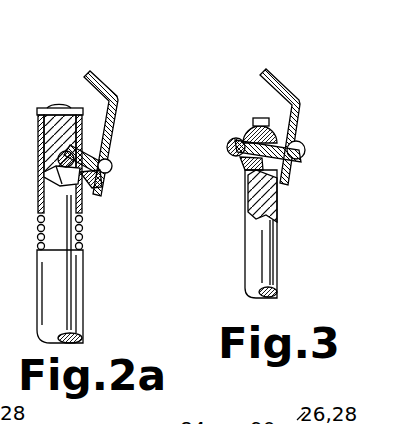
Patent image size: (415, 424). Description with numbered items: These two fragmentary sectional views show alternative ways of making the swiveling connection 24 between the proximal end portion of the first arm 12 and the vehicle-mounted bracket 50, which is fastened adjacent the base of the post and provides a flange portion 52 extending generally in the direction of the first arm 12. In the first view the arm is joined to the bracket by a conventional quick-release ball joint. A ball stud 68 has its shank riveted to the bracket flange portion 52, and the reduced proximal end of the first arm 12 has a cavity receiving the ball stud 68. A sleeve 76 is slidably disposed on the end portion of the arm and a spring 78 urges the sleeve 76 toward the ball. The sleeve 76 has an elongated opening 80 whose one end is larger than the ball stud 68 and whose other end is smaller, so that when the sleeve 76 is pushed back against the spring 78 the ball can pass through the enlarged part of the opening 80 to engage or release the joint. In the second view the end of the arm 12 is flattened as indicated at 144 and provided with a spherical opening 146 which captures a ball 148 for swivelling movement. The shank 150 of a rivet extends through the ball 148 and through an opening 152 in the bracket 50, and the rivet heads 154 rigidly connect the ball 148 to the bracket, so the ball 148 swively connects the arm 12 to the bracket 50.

In FIG. 2A, the connection 24 is at (74, 60).
In FIG. 2A, the sleeve 76 is at (38, 137).
In FIG. 2A, the ball stud 68 is at (50, 168).
In FIG. 2A, the flange portion 52 is at (117, 105).
In FIG. 2A, the bracket 50 is at (95, 74).
In FIG. 3, the bracket 50 is at (270, 84).
In FIG. 2A, the elongated opening 80 is at (78, 150).
In FIG. 2A, the spring 78 is at (82, 240).
In FIG. 2A, the first arm 12 is at (65, 288).
In FIG. 3, the first arm 12 is at (274, 265).
In FIG. 3, the ball 148 is at (252, 126).
In FIG. 3, the opening 152 is at (300, 149).
In FIG. 3, the heads 154 is at (228, 138).
In FIG. 3, the shank 150 is at (246, 162).
In FIG. 3, the spherical opening 146 is at (248, 172).
In FIG. 3, the flattened end portion 144 is at (244, 182).